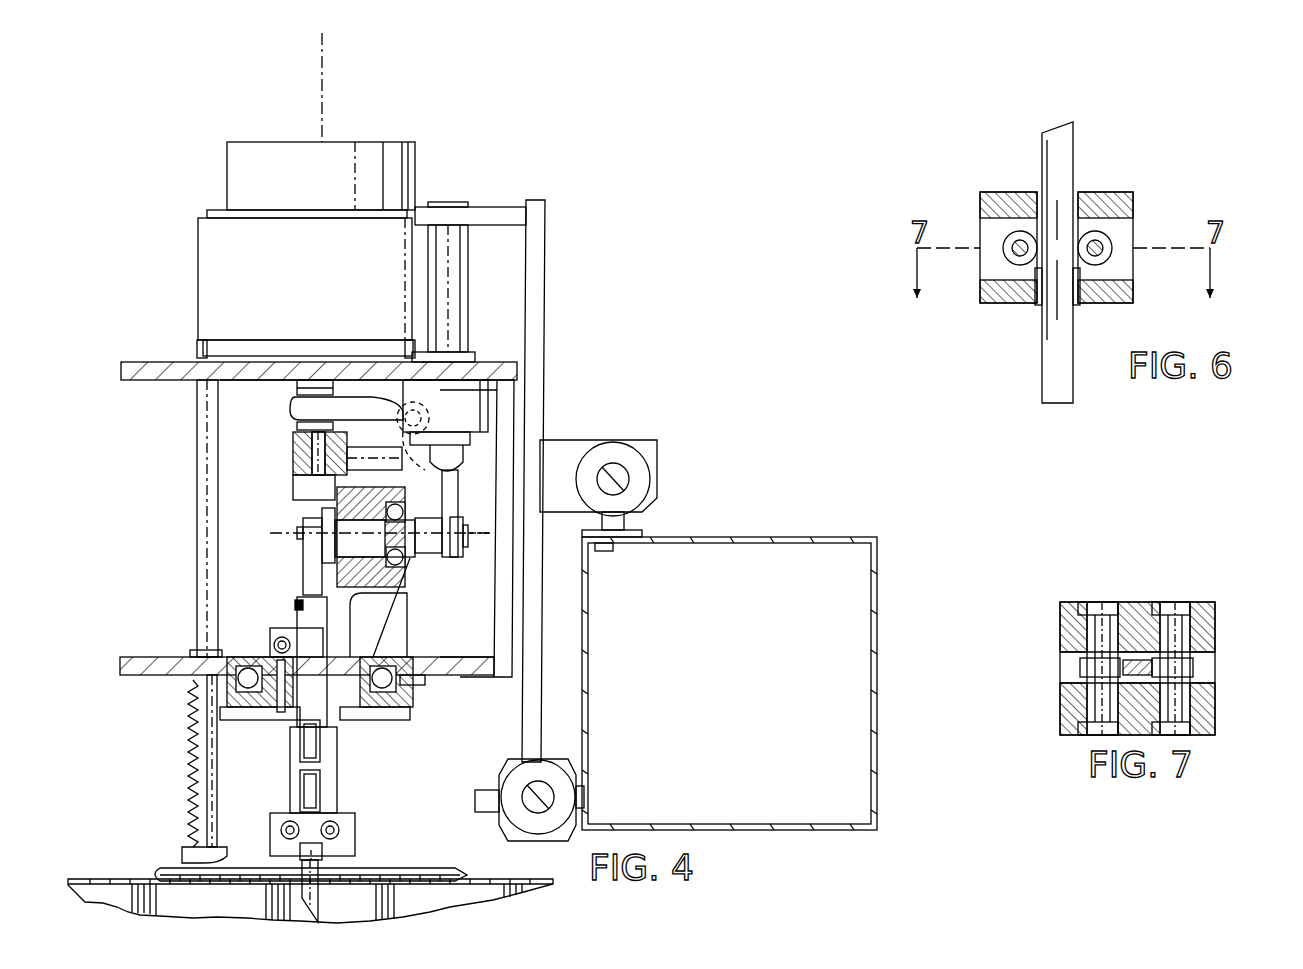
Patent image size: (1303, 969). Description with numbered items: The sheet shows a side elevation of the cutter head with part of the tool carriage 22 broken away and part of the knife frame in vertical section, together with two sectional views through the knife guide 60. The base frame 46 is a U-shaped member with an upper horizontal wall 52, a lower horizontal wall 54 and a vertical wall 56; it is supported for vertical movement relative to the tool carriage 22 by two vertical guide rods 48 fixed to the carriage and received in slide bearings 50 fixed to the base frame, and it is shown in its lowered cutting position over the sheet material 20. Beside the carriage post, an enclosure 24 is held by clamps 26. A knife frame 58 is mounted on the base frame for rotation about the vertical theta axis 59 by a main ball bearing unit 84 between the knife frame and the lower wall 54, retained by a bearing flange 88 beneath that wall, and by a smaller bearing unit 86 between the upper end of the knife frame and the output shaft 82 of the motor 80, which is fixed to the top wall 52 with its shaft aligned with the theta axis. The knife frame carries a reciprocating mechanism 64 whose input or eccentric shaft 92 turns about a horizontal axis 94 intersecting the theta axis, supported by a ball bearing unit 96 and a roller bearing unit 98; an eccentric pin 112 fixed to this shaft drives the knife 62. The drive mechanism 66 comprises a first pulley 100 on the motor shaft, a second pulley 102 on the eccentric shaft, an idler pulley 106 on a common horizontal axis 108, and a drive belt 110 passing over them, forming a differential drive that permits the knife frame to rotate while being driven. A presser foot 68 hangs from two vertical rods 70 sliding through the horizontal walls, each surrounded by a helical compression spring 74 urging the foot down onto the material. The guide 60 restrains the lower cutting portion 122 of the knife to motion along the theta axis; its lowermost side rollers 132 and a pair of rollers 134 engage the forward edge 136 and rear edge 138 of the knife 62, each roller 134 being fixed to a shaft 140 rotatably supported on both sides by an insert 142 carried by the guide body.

In FIG. 4, the sheet material 20 is at (510, 879).
In FIG. 4, the tool carriage 22 is at (545, 221).
In FIG. 4, the housing box 24 is at (712, 537).
In FIG. 4, the clamp 26 is at (628, 476).
In FIG. 4, the base frame 46 is at (507, 401).
In FIG. 4, the vertical guide rods 48 is at (455, 281).
In FIG. 4, the slide bearings 50 is at (478, 390).
In FIG. 4, the upper horizontal wall 52 is at (153, 361).
In FIG. 4, the lower horizontal wall 54 is at (135, 676).
In FIG. 4, the vertical wall 56 is at (508, 423).
In FIG. 4, the knife frame 58 is at (378, 621).
In FIG. 4, the theta axis 59 is at (323, 38).
In FIG. 4, the knife guide 60 is at (330, 793).
In FIG. 6, the knife guide 60 is at (1112, 193).
In FIG. 7, the knife guide 60 is at (1205, 615).
In FIG. 4, the knife 62 is at (319, 915).
In FIG. 6, the knife 62 is at (1063, 357).
In FIG. 7, the knife 62 is at (1135, 660).
In FIG. 4, the reciprocating mechanism 64 is at (290, 552).
In FIG. 4, the drive mechanism 66 is at (283, 456).
In FIG. 4, the presser foot 68 is at (466, 876).
In FIG. 4, the vertical rods 70 is at (197, 525).
In FIG. 4, the helical compression spring 74 is at (190, 751).
In FIG. 4, the motor 80 is at (398, 165).
In FIG. 4, the output shaft 82 is at (293, 476).
In FIG. 4, the main ball bearing unit 84 is at (392, 658).
In FIG. 4, the smaller bearing unit 86 is at (296, 440).
In FIG. 4, the bearing flange 88 is at (395, 716).
In FIG. 4, the input or eccentric shaft 92 is at (461, 534).
In FIG. 4, the horizontal axis 94 is at (302, 534).
In FIG. 4, the ball bearing unit 96 is at (401, 562).
In FIG. 4, the roller bearing unit 98 is at (358, 512).
In FIG. 4, the first pulley 100 is at (297, 388).
In FIG. 4, the second pulley 102 is at (448, 548).
In FIG. 4, the idler pulley 106 is at (389, 424).
In FIG. 4, the common horizontal axis 108 is at (432, 413).
In FIG. 4, the drive belt 110 is at (445, 485).
In FIG. 4, the eccentric pin 112 is at (303, 560).
In FIG. 4, the lower cutting portion 122 is at (318, 880).
In FIG. 6, the rollers 132 is at (1076, 303).
In FIG. 6, the rollers 134 is at (1000, 254).
In FIG. 7, the rollers 134 is at (1080, 667).
In FIG. 6, the forward edge 136 is at (1073, 130).
In FIG. 6, the rear edge 138 is at (1043, 146).
In FIG. 6, the shaft 140 is at (1005, 240).
In FIG. 7, the shaft 140 is at (1090, 705).
In FIG. 7, the insert 142 is at (1078, 612).